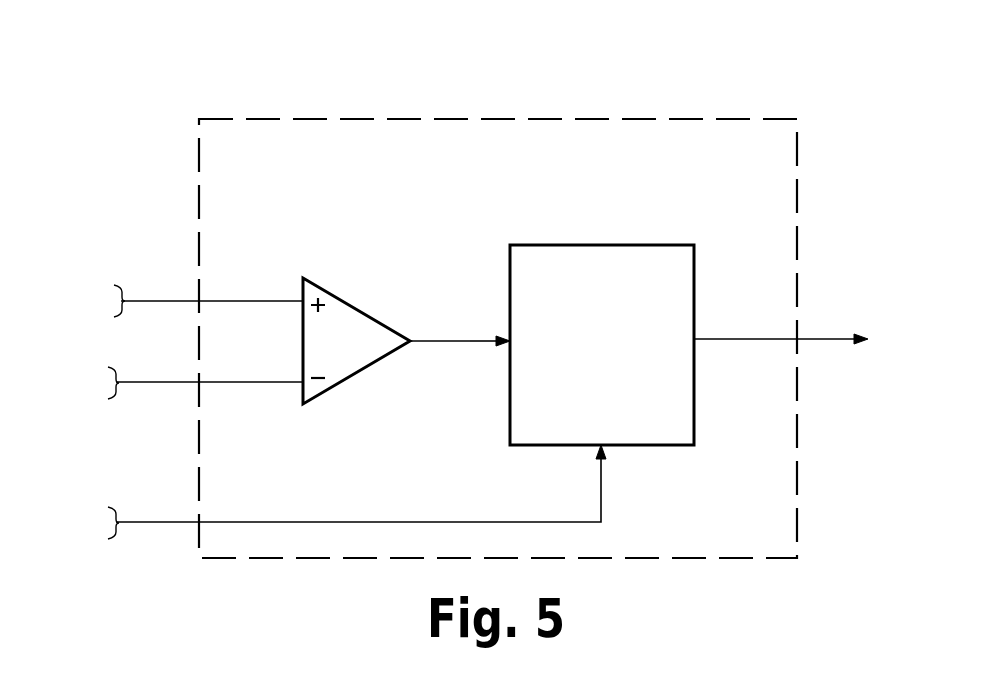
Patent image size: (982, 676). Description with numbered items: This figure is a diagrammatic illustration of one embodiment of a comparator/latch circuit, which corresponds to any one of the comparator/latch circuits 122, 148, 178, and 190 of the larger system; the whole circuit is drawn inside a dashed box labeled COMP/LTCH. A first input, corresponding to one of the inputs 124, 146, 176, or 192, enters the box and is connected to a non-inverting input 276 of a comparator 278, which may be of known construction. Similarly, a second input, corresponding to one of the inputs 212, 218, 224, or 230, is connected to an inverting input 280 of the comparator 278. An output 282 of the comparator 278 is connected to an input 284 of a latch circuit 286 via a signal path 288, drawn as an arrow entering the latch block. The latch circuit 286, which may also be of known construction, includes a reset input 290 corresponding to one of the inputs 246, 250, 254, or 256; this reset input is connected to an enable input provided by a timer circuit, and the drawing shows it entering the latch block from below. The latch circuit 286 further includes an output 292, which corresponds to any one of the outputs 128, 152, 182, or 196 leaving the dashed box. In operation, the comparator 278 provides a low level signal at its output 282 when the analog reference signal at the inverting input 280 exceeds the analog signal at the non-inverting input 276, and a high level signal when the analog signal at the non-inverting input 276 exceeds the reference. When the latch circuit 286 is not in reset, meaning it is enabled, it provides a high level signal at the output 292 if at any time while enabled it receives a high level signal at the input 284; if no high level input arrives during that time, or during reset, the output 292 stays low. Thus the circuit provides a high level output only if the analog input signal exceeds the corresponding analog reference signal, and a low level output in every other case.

The comparator/latch circuit 122 is at (498, 293).
The comparator/latch circuit 148 is at (498, 293).
The comparator/latch circuit 178 is at (498, 293).
The comparator/latch circuit 190 is at (655, 60).
The input 124 is at (208, 234).
The input 146 is at (208, 234).
The input 176 is at (208, 234).
The input 192 is at (199, 301).
The input 212 is at (171, 336).
The input 218 is at (171, 336).
The input 224 is at (171, 336).
The input 230 is at (199, 382).
The input 246 is at (328, 489).
The input 250 is at (328, 489).
The input 254 is at (328, 489).
The input 256 is at (199, 522).
The output 128 is at (784, 282).
The output 152 is at (784, 282).
The output 182 is at (784, 282).
The output 196 is at (797, 339).
The non-inverting input 276 is at (303, 278).
The comparator 278 is at (357, 318).
The inverting input 280 is at (303, 404).
The output 282 is at (413, 336).
The input 284 is at (504, 335).
The latch circuit 286 is at (626, 344).
The signal path 288 is at (470, 339).
The reset input 290 is at (605, 450).
The output 292 is at (697, 337).